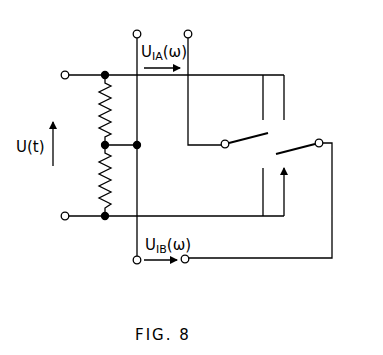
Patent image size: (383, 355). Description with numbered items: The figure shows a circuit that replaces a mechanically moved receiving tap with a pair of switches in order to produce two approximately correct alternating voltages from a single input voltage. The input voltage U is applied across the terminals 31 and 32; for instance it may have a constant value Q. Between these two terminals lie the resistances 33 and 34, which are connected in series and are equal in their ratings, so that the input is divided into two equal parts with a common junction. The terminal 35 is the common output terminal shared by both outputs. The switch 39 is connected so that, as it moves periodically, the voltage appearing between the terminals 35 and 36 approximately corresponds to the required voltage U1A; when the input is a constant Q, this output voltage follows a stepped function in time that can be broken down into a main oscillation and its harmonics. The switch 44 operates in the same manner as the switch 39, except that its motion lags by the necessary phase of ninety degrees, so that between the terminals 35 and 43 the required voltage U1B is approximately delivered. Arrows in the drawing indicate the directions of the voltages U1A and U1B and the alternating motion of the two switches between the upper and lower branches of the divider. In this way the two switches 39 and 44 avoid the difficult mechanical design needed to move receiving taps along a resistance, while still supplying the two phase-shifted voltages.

The terminal 31 is at (61, 75).
The terminal 32 is at (71, 217).
The resistance 33 is at (99, 107).
The resistance 34 is at (99, 185).
The terminal 35 is at (135, 151).
The terminal 36 is at (187, 23).
The switch 39 is at (238, 146).
The terminal 43 is at (188, 262).
The switch 44 is at (308, 140).